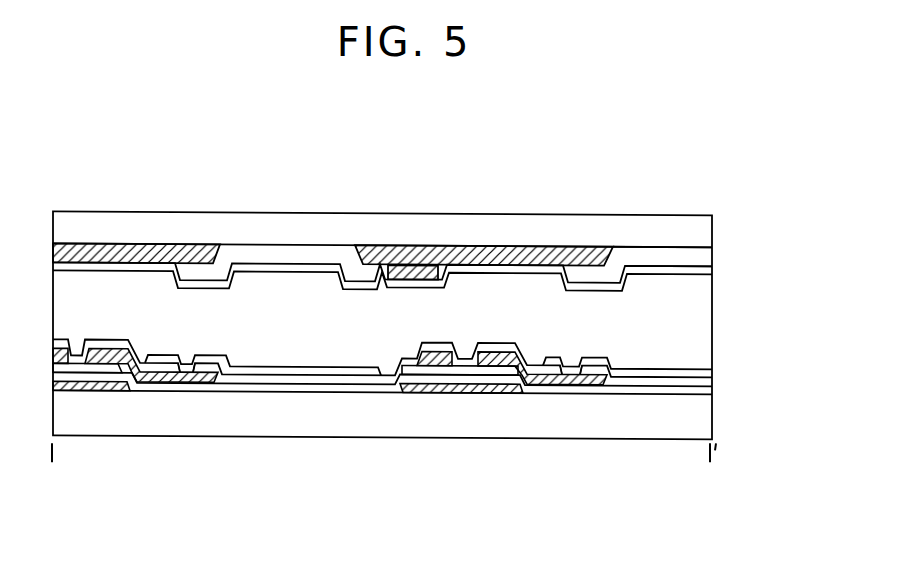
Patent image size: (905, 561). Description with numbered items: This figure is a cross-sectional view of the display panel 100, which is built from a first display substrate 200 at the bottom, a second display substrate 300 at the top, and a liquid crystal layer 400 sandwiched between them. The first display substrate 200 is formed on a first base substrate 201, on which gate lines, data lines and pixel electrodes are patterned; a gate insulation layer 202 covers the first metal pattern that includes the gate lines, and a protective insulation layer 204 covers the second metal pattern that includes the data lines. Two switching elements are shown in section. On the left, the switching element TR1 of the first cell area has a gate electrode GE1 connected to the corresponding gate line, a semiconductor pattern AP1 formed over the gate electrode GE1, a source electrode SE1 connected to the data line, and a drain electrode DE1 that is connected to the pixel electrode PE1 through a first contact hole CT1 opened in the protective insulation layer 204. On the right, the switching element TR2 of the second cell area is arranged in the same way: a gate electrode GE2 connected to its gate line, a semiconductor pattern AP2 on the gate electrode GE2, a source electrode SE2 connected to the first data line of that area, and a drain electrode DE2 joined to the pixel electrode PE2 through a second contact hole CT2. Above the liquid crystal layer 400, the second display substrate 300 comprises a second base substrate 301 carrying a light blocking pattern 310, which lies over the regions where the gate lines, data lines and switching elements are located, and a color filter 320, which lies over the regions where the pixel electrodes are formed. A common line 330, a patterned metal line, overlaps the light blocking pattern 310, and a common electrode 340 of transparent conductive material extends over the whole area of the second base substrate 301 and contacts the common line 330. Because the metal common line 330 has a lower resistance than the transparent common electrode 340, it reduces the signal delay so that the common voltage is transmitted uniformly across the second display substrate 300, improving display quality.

The display panel 100 is at (364, 122).
The second display substrate 300 is at (52, 213).
The second base substrate 301 is at (706, 228).
The light blocking pattern 310 is at (134, 250).
The color filter 320 is at (683, 252).
The common line 330 is at (413, 266).
The common electrode 340 is at (706, 266).
The liquid crystal layer 400 is at (52, 273).
The first display substrate 200 is at (52, 342).
The first base substrate 201 is at (706, 413).
The gate insulation layer 202 is at (706, 387).
The protective insulation layer 204 is at (706, 376).
The switching element TR1 is at (42, 502).
The gate electrode GE1 is at (80, 392).
The semiconductor pattern AP1 is at (103, 372).
The source electrode SE1 is at (56, 394).
The drain electrode DE1 is at (126, 366).
The first contact hole CT1 is at (186, 352).
The pixel electrode PE1 is at (276, 361).
The switching element TR2 is at (385, 499).
The gate electrode GE2 is at (447, 390).
The semiconductor pattern AP2 is at (488, 372).
The source electrode SE2 is at (396, 373).
The drain electrode DE2 is at (548, 381).
The second contact hole CT2 is at (574, 350).
The pixel electrode PE2 is at (660, 358).